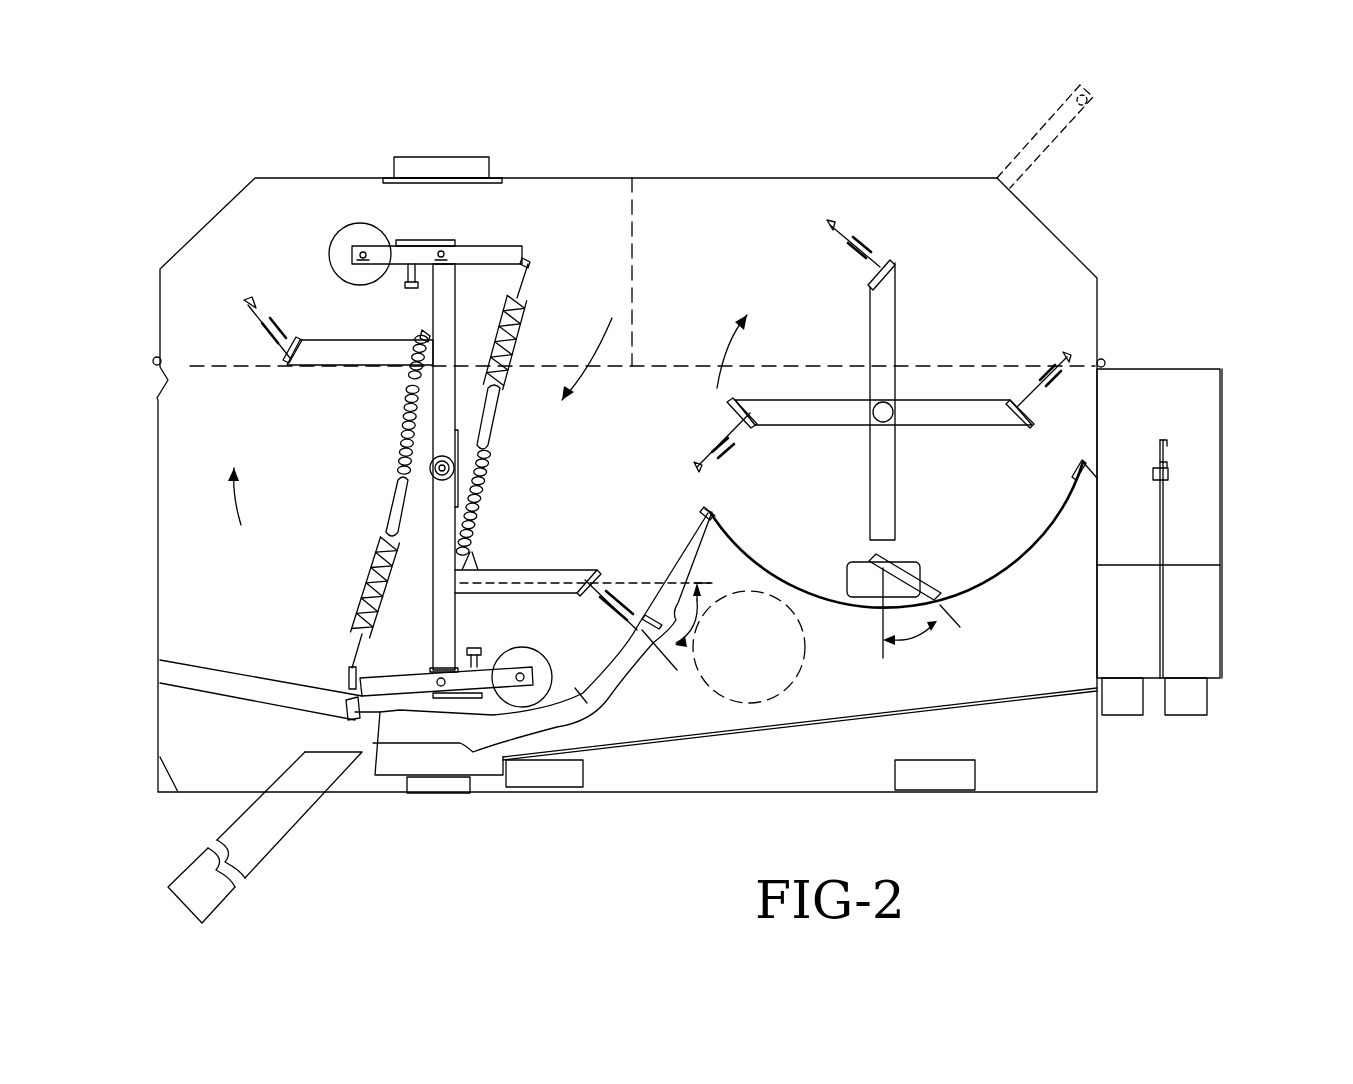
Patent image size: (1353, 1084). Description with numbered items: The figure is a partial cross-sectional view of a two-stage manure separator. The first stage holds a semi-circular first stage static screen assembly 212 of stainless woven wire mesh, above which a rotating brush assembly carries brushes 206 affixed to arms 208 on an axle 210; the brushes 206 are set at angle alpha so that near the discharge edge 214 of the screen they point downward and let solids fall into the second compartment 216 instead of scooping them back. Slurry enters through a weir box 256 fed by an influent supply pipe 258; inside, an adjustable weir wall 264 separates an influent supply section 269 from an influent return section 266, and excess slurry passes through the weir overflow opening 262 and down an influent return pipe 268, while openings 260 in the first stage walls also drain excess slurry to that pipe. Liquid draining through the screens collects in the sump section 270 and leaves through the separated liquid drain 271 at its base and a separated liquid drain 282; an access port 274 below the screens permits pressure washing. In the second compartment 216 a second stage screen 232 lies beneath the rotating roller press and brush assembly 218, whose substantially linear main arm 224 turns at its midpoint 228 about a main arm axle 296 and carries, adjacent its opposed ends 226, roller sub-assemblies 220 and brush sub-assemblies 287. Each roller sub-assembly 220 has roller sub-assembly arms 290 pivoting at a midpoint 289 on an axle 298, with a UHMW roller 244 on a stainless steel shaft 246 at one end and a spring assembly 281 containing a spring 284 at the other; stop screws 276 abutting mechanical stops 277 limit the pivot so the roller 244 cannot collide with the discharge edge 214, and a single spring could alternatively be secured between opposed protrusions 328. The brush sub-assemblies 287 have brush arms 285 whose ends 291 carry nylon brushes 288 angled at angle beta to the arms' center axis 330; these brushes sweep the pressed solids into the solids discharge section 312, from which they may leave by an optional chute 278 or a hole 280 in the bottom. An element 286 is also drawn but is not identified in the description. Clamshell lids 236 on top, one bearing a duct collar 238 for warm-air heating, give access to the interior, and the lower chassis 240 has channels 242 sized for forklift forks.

The brushes 206 is at (925, 590).
The arms 208 is at (888, 328).
The axle 210 is at (880, 412).
The first stage static screen assembly 212 is at (985, 583).
The discharge edge 214 is at (712, 513).
The second compartment 216 is at (487, 403).
The second stage rotating roller press and brush assembly 218 is at (440, 410).
The roller sub-assembly 220 is at (352, 722).
The main arm 224 is at (437, 558).
The opposed ends 226 is at (443, 667).
The midpoint 228 is at (430, 468).
The second stage screen 232 is at (527, 680).
The clamshell lids 236 is at (217, 233).
The duct collar 238 is at (450, 163).
The lower chassis 240 is at (1045, 757).
The channels 242 is at (942, 775).
The rollers 244 is at (600, 683).
The stainless steel shaft 246 is at (490, 677).
The weir box 256 is at (1222, 398).
The influent supply pipe 258 is at (1125, 717).
The openings 260 is at (870, 585).
The weir overflow opening 262 is at (1175, 398).
The adjustable weir wall 264 is at (1162, 510).
The influent return section 266 is at (1190, 463).
The influent return pipe 268 is at (1190, 717).
The influent supply section 269 is at (1135, 452).
The sump section 270 is at (875, 687).
The separated liquid drain 271 is at (447, 787).
The access port 274 is at (750, 693).
The stop screws 276 is at (450, 673).
The mechanical stops 277 is at (450, 673).
The chute 278 is at (192, 890).
The hole 280 is at (203, 793).
The spring assemblies 281 is at (385, 533).
The separated liquid drain 282 is at (427, 785).
The spring 284 is at (365, 605).
The second stage brush arms 285 is at (495, 568).
The scraper blade 286 is at (420, 330).
The brush sub-assemblies 287 is at (540, 570).
The brushes 288 is at (625, 610).
The midpoint 289 is at (438, 676).
The roller sub-assembly arms 290 is at (353, 677).
The ends 291 is at (607, 575).
The second stage main arm axle 296 is at (432, 478).
The axle 298 is at (370, 757).
The solids discharge section 312 is at (305, 685).
The opposed protrusions 328 is at (350, 682).
The center axis 330 is at (620, 583).